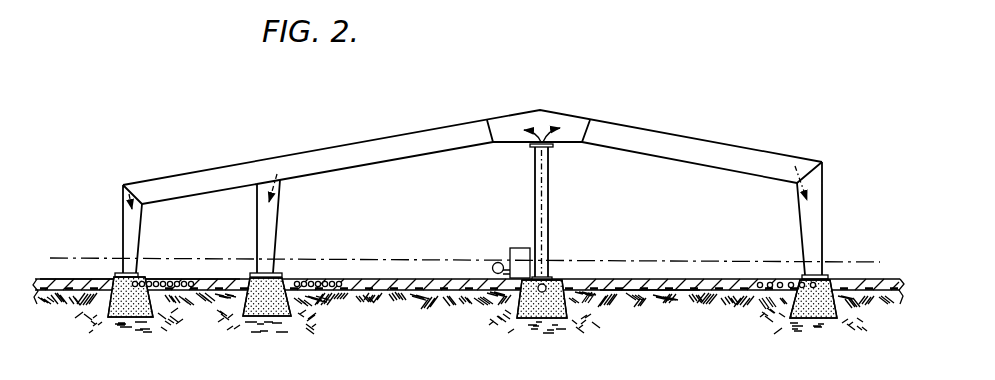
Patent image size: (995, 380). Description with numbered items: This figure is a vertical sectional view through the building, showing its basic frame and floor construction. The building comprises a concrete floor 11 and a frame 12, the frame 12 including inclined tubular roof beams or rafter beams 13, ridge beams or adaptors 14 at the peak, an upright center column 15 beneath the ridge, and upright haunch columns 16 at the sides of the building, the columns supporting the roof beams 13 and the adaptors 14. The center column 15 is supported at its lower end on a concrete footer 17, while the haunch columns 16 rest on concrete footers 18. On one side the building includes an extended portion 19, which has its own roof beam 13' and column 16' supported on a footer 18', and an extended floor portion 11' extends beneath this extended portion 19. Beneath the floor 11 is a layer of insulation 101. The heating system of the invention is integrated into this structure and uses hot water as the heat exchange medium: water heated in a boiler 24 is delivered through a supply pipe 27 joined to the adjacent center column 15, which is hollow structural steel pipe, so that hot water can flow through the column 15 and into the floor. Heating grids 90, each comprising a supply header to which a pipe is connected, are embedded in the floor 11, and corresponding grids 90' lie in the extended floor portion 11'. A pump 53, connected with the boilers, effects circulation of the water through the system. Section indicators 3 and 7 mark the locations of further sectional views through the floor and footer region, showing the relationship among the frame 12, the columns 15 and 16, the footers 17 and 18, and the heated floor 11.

The frame 12 is at (501, 174).
The roof beams 13 is at (472, 139).
The roof beams 13' is at (199, 164).
The ridge beams or adaptors 14 is at (540, 110).
The center columns 15 is at (548, 208).
The haunch columns 16 is at (568, 218).
The columns 16' is at (104, 229).
The footers 17 is at (500, 318).
The footers 18 is at (555, 317).
The footers 18' is at (137, 317).
The extended portion 19 is at (161, 196).
The boiler 24 is at (518, 248).
The supply pipe 27 is at (535, 320).
The pump 53 is at (493, 265).
The heating grid 90 is at (554, 258).
The extension reinforcing rods 90' is at (162, 247).
The concrete floor 11 is at (467, 259).
The extended floor portion 11' is at (148, 249).
The layer of insulation 101 is at (622, 297).
The section line 3- 3 is at (70, 233).
The section line 7- 7 is at (160, 245).